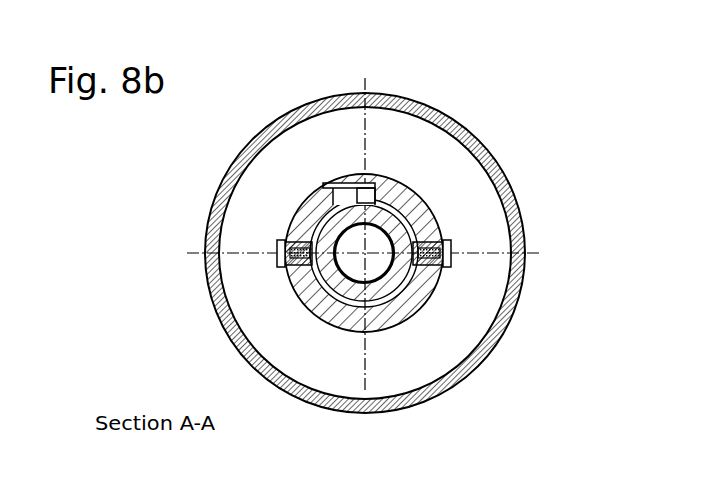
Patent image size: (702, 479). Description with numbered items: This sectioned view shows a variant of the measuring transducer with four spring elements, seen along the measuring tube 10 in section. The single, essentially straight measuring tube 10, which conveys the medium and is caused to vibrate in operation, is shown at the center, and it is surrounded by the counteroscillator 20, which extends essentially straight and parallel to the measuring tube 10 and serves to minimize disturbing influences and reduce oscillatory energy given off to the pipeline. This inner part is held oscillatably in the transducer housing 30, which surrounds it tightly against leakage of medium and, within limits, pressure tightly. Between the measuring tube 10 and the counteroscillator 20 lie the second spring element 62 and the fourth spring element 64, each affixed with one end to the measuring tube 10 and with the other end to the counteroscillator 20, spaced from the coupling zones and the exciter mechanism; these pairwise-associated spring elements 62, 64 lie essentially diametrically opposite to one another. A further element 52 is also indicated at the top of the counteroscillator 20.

The measuring tube 10 is at (330, 227).
The counteroscillator 20 is at (427, 291).
The transducer housing 30 is at (443, 115).
The key 52 is at (337, 143).
The second spring element 62 is at (452, 245).
The fourth spring element 64 is at (277, 255).